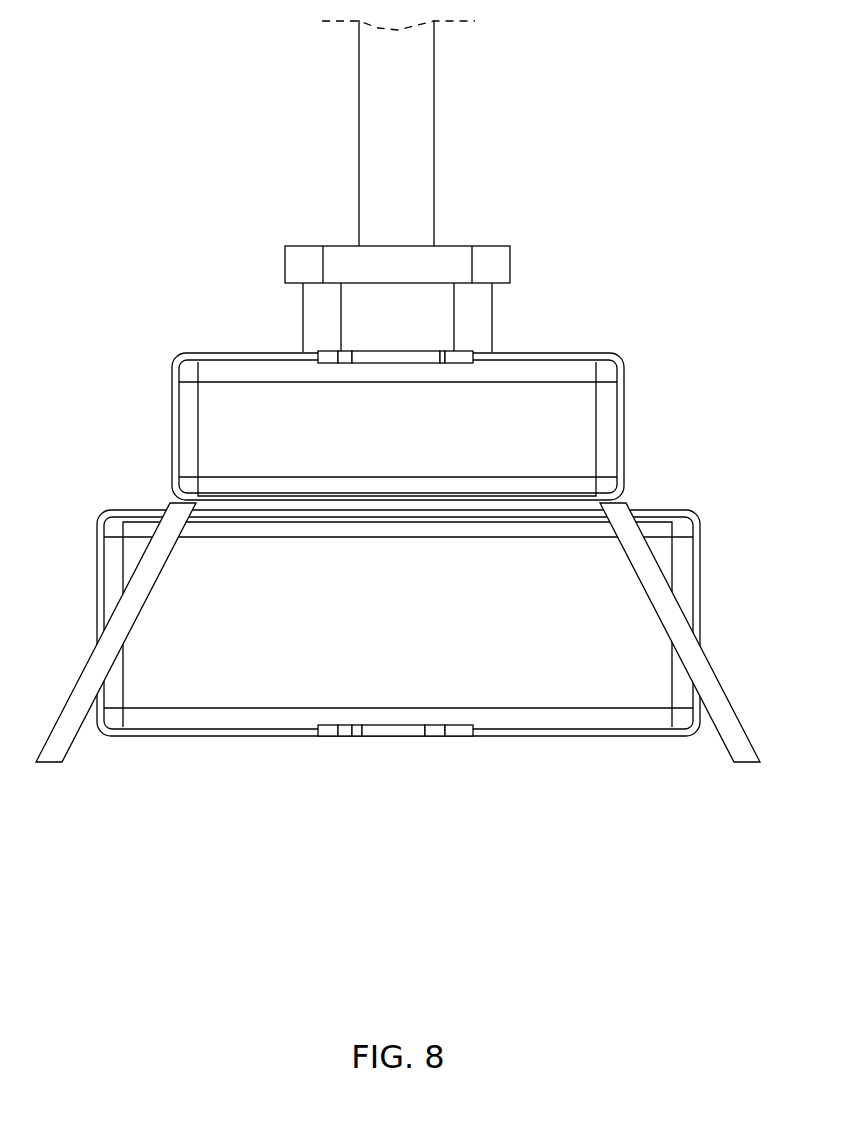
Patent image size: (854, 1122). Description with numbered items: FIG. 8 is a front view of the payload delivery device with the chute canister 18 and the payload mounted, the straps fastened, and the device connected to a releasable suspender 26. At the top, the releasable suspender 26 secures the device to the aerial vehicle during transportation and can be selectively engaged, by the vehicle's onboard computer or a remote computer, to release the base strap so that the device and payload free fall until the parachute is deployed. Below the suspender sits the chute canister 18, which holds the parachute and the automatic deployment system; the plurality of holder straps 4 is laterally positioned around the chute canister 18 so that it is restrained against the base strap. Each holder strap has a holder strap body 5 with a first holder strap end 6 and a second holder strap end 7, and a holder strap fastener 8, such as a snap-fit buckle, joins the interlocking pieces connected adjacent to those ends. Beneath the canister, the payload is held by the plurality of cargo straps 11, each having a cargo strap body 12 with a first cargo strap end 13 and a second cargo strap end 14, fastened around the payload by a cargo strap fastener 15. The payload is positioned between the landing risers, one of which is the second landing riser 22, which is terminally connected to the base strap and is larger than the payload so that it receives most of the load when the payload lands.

The plurality of holder straps 4 is at (366, 371).
The holder strap body 5 is at (620, 355).
The first holder strap end 6 is at (313, 354).
The second holder strap end 7 is at (483, 354).
The holder strap fastener 8 is at (400, 348).
The plurality of cargo straps 11 is at (398, 685).
The cargo strap body 12 is at (618, 735).
The first cargo strap end 13 is at (312, 739).
The second cargo strap end 14 is at (478, 739).
The cargo strap fastener 15 is at (398, 751).
The chute canister 18 is at (190, 437).
The second landing riser 22 is at (60, 745).
The releasable suspender 26 is at (432, 130).